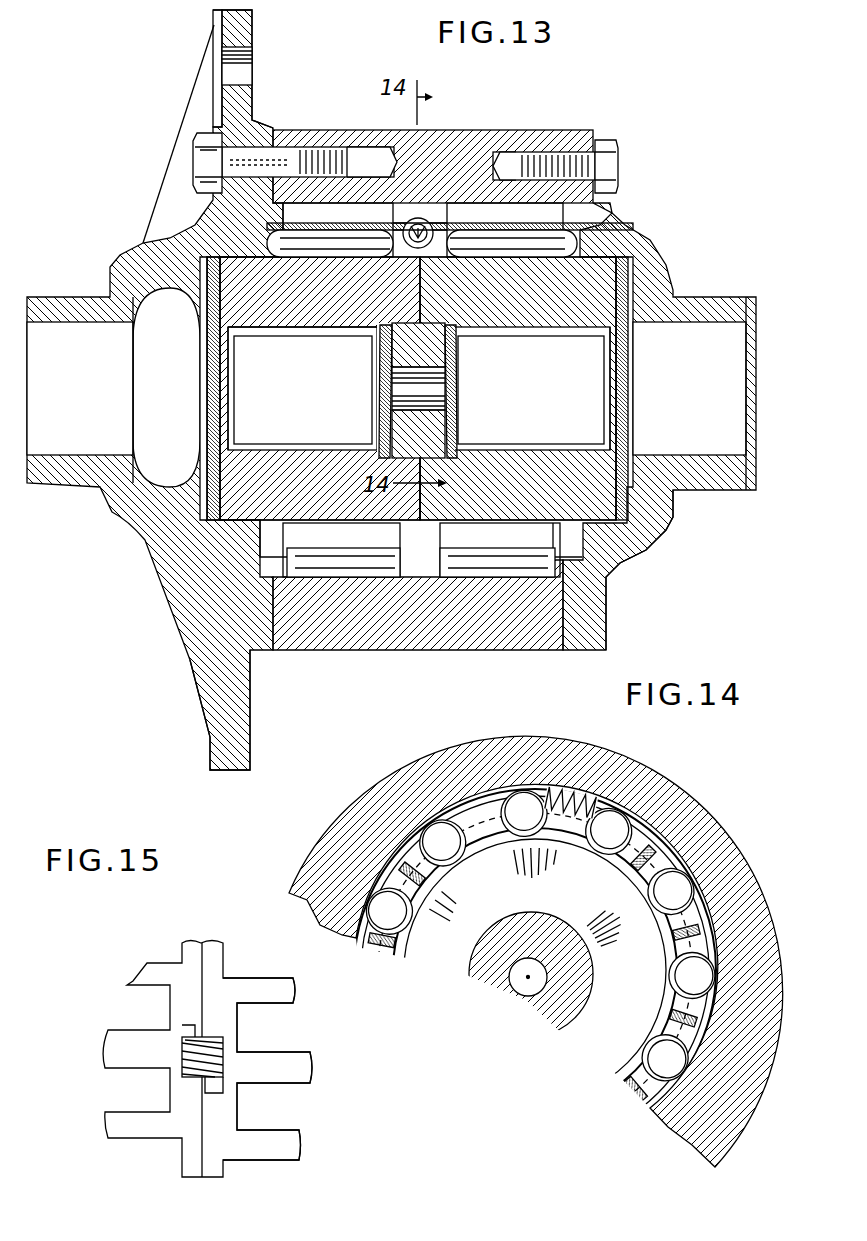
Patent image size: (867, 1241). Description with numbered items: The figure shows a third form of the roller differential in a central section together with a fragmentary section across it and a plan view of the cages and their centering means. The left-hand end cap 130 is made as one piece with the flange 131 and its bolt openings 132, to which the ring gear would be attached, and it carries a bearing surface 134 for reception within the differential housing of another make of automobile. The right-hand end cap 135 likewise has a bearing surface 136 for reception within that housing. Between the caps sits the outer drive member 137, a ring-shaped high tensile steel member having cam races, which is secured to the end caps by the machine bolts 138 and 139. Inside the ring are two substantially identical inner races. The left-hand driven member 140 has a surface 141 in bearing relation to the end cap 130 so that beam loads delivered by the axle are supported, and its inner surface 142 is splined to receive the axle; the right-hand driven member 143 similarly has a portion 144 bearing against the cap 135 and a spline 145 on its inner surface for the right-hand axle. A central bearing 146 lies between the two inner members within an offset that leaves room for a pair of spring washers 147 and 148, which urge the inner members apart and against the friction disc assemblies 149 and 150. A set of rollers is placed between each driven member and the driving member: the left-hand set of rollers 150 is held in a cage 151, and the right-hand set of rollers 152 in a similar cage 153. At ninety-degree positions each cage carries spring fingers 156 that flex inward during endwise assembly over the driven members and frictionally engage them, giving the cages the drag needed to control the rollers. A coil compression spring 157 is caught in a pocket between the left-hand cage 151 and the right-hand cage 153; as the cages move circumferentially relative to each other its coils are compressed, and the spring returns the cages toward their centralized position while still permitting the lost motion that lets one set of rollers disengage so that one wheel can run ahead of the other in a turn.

In FIG. 13, the left-hand end cap 130 is at (143, 246).
In FIG. 13, the flange 131 is at (216, 22).
In FIG. 13, the bolt openings 132 is at (240, 85).
In FIG. 13, the bearing surface 134 is at (55, 300).
In FIG. 13, the right-hand end cap 135 is at (667, 236).
In FIG. 13, the bearing surface 136 is at (722, 297).
In FIG. 13, the outer drive member 137 is at (500, 131).
In FIG. 14, the outer drive member 137 is at (632, 758).
In FIG. 13, the machine bolt 138 is at (197, 160).
In FIG. 13, the machine bolt 139 is at (618, 165).
In FIG. 13, the left-hand driven member 140 is at (302, 328).
In FIG. 13, the bearing surface 141 is at (243, 330).
In FIG. 13, the inner surface 142 is at (345, 352).
In FIG. 13, the right-hand driven member 143 is at (545, 328).
In FIG. 14, the right-hand driven member 143 is at (590, 907).
In FIG. 13, the bearing portion 144 is at (596, 524).
In FIG. 13, the spline 145 is at (580, 328).
In FIG. 13, the central bearing 146 is at (440, 406).
In FIG. 14, the central bearing 146 is at (517, 917).
In FIG. 13, the spring washer 147 is at (447, 345).
In FIG. 13, the spring washer 148 is at (380, 343).
In FIG. 13, the friction disc assembly 149 is at (630, 340).
In FIG. 13, the friction disc assembly / left-hand set of rollers 150 is at (210, 344).
In FIG. 13, the left-hand cage 151 is at (338, 258).
In FIG. 15, the left-hand cage 151 is at (148, 963).
In FIG. 13, the right-hand set of rollers 152 is at (497, 577).
In FIG. 14, the right-hand set of rollers 152 is at (700, 792).
In FIG. 13, the right-hand cage 153 is at (633, 208).
In FIG. 14, the right-hand cage 153 is at (698, 932).
In FIG. 15, the right-hand cage 153 is at (285, 972).
In FIG. 13, the spring fingers 156 is at (285, 258).
In FIG. 14, the spring fingers 156 is at (398, 937).
In FIG. 13, the coil compression spring 157 is at (433, 226).
In FIG. 14, the coil compression spring 157 is at (590, 808).
In FIG. 15, the coil compression spring 157 is at (223, 1041).